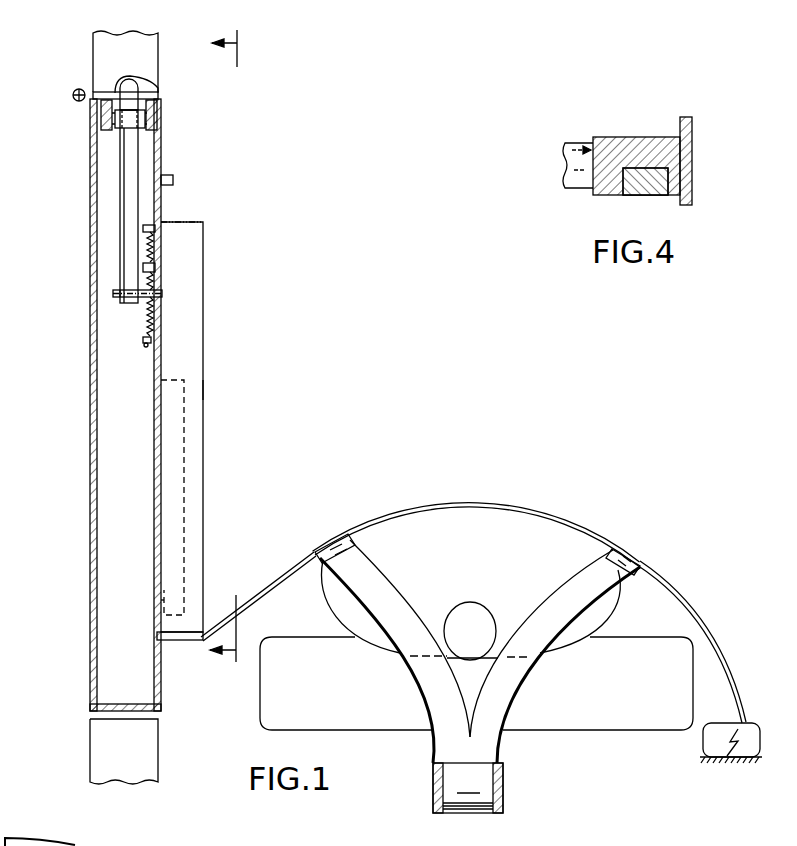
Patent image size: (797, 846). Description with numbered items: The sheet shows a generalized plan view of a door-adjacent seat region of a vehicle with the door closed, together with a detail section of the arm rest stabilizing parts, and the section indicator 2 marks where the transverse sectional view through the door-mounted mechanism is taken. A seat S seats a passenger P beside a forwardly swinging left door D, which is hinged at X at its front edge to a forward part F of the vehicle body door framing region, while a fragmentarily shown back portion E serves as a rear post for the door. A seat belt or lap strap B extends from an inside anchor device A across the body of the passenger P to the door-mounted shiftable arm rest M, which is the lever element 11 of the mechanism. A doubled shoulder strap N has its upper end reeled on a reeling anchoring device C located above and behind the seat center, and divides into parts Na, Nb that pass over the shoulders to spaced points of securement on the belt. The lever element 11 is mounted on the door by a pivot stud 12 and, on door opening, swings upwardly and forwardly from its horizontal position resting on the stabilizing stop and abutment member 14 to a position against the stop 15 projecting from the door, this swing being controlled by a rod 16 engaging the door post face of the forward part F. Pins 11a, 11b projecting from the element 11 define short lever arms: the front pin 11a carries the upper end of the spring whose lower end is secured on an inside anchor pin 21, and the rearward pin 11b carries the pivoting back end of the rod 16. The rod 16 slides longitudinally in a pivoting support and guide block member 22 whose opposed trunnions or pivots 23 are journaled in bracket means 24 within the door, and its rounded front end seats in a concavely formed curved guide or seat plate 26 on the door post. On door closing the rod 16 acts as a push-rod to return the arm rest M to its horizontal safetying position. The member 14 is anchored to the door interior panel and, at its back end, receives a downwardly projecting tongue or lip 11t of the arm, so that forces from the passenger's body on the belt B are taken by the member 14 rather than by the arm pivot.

In FIG. 1, the forward part of the vehicle body door framing region F is at (92, 50).
In FIG. 1, the hinge X is at (73, 95).
In FIG. 1, the curved guide or seat plate 26 is at (160, 90).
In FIG. 1, the bracket means 24 is at (158, 106).
In FIG. 1, the trunnions or pivots 23 is at (148, 118).
In FIG. 1, the pivoting support and guide block member 22 is at (133, 120).
In FIG. 1, the rod 16 is at (127, 184).
In FIG. 1, the left door D is at (88, 662).
In FIG. 1, the back portion E is at (105, 748).
In FIG. 1, the stop 15 is at (172, 176).
In FIG. 1, the lever element 11 is at (203, 303).
In FIG. 4, the lever element 11 is at (590, 155).
In FIG. 1, the door-mounted shiftable arm rest M is at (205, 385).
In FIG. 1, the front pin 11a is at (148, 228).
In FIG. 1, the pivot stud 12 is at (155, 268).
In FIG. 1, the rearward pin 11b is at (112, 293).
In FIG. 1, the inside anchor pin 21 is at (145, 343).
In FIG. 1, the stabilizing stop and abutment member 14 is at (184, 460).
In FIG. 4, the stabilizing stop and abutment member 14 is at (646, 192).
In FIG. 1, the tongue or lip 11t is at (165, 597).
In FIG. 4, the tongue or lip 11t is at (688, 182).
In FIG. 1, the section line 2 is at (213, 347).
In FIG. 1, the seat belt or lap strap B is at (412, 505).
In FIG. 4, the seat belt or lap strap B is at (578, 175).
In FIG. 1, the passenger P is at (576, 540).
In FIG. 1, the seat S is at (670, 624).
In FIG. 1, the inside anchor device A is at (735, 760).
In FIG. 1, the shoulder strap part Nb is at (437, 680).
In FIG. 1, the shoulder strap part Na is at (518, 680).
In FIG. 1, the shoulder strap N is at (433, 780).
In FIG. 1, the reeling anchoring device C is at (503, 785).